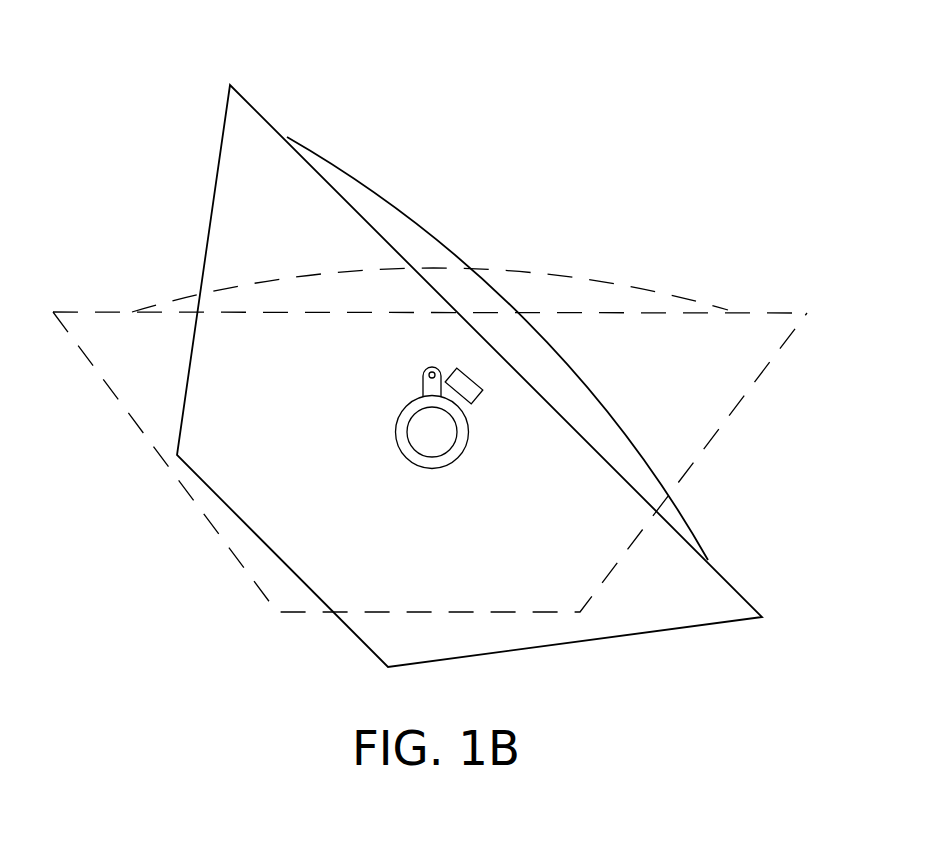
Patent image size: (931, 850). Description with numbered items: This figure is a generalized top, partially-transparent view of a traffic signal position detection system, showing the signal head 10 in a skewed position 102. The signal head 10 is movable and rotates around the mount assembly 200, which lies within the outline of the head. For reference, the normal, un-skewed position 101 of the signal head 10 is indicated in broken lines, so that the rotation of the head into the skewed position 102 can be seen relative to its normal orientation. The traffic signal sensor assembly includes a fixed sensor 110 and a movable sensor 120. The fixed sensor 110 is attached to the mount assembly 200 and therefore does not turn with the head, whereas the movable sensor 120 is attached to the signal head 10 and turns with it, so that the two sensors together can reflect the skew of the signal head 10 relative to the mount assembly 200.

The signal head 10 is at (255, 108).
The un-skewed position 101 is at (712, 292).
The skewed position 102 is at (746, 553).
The fixed sensor 110 is at (427, 373).
The movable sensor 120 is at (478, 400).
The mount assembly 200 is at (432, 458).